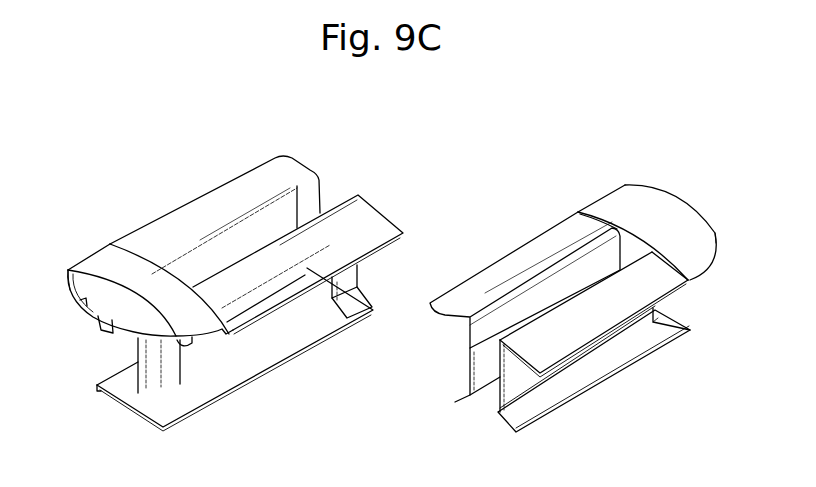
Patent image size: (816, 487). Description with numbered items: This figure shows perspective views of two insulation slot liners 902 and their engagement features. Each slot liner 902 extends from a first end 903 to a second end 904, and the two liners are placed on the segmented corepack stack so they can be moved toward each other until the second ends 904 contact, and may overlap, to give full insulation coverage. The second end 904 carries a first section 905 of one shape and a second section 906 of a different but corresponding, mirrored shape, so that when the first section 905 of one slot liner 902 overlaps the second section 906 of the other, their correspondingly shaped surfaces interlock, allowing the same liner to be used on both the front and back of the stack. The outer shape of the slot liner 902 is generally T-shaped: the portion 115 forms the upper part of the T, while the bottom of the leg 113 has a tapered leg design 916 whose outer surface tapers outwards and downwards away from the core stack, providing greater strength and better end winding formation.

The slot liner 902 is at (158, 166).
The first end 903 is at (91, 314).
The second end 904 is at (337, 190).
The first section 905 is at (303, 160).
The second section 906 is at (392, 222).
The tapered leg design 916 is at (147, 407).
The leg 113 is at (117, 410).
The portion forming the upper part of the T-shape 115 is at (67, 270).